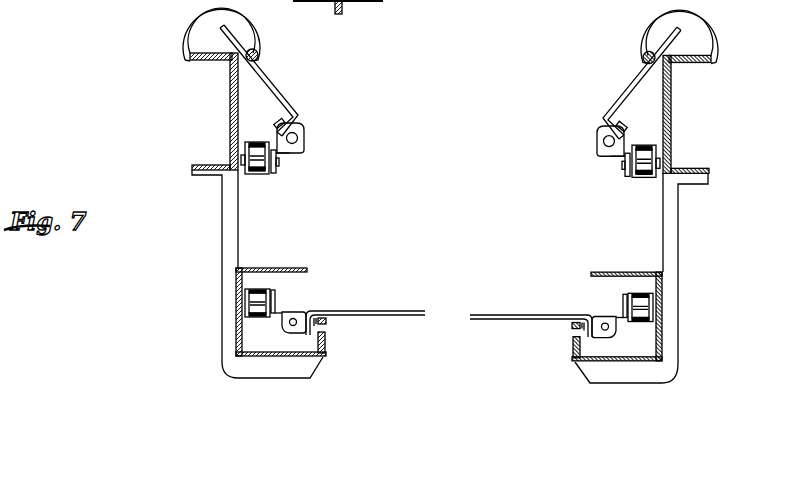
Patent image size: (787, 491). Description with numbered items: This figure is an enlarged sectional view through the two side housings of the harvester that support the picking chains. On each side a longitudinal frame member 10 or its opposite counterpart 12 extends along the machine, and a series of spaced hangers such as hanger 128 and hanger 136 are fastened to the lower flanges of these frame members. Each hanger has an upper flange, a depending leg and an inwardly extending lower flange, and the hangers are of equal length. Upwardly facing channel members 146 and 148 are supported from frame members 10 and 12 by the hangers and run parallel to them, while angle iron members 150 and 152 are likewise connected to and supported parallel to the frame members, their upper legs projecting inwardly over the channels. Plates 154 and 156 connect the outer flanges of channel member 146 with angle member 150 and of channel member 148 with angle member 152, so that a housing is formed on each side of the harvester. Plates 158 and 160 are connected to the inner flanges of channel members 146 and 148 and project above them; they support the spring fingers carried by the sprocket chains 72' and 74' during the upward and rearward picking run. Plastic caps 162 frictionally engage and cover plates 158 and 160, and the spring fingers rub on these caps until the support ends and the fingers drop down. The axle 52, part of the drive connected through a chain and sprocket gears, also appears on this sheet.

The longitudinal frame member 10 is at (229, 89).
The longitudinal frame member 12 is at (672, 116).
The axle 52 is at (346, 5).
The sprocket chain 72' is at (278, 303).
The sprocket chain 74' is at (619, 308).
The hanger 128 is at (223, 232).
The hanger 136 is at (680, 250).
The channel member 146 is at (232, 357).
The channel member 148 is at (665, 347).
The angle iron member 150 is at (243, 268).
The angle iron member 152 is at (643, 270).
The plate 154 is at (237, 305).
The plate 156 is at (665, 305).
The plate 158 is at (328, 340).
The plate 160 is at (573, 342).
The plastic cap 162 is at (329, 323).